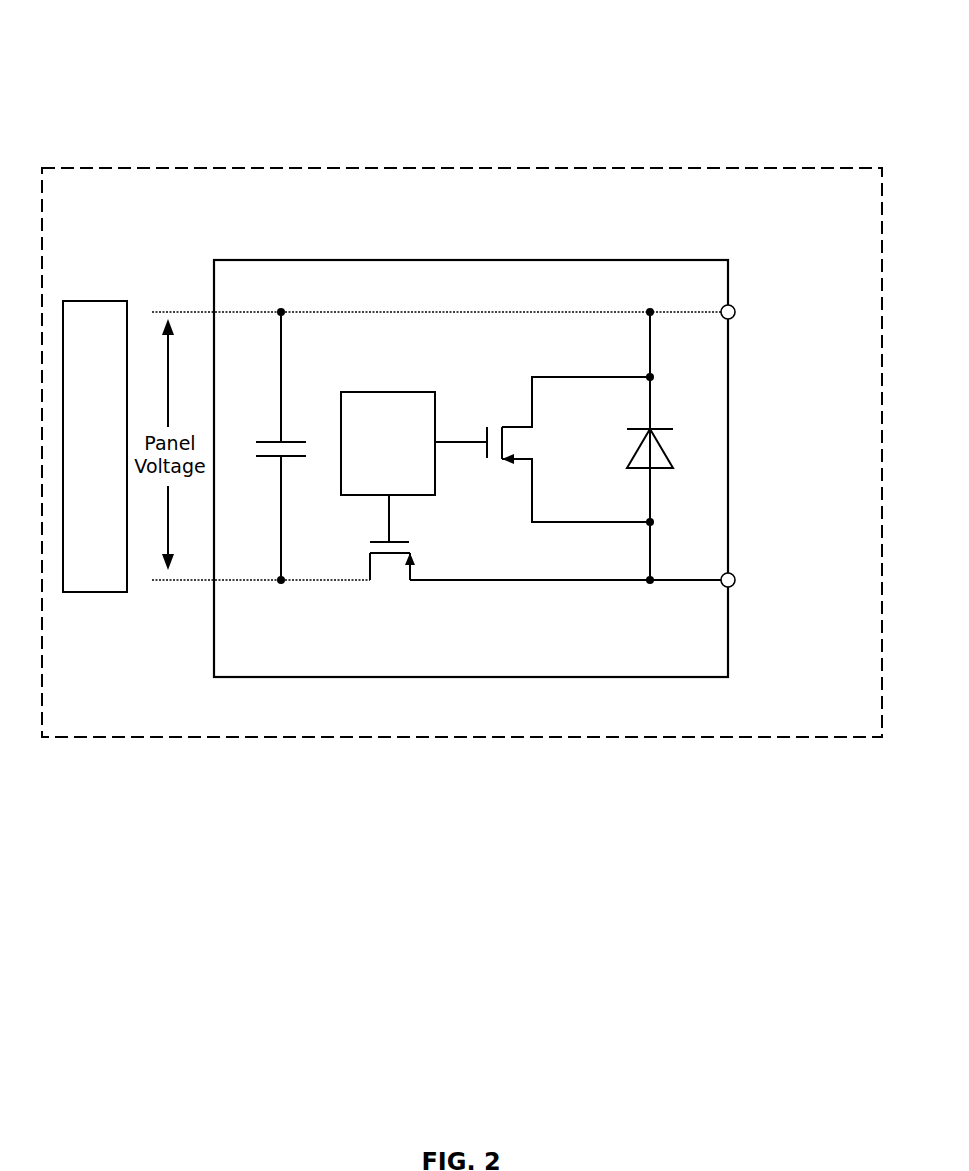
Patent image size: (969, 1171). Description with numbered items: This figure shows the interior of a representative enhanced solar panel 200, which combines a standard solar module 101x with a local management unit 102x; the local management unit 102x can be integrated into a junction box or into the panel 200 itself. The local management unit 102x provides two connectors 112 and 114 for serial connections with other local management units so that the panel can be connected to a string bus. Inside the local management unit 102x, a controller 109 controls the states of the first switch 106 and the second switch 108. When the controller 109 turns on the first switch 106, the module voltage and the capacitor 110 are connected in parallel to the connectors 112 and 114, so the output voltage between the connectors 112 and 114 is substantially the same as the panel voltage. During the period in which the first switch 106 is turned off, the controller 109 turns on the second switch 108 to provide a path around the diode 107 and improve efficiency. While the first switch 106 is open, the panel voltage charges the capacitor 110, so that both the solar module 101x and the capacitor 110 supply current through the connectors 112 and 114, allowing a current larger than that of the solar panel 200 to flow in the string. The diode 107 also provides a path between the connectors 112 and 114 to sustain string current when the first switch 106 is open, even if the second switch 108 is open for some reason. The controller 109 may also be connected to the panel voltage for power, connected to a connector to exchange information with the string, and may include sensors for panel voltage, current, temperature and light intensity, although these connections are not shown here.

The enhanced solar panel 200 is at (755, 63).
The standard solar module 101x is at (95, 446).
The local management unit 102x is at (471, 468).
The switch Q1 106 is at (380, 538).
The diode D1 107 is at (666, 425).
The switch Q2 108 is at (484, 448).
The controller 109 is at (388, 443).
The capacitor C1 110 is at (262, 459).
The connector 112 is at (734, 319).
The connector 114 is at (735, 573).